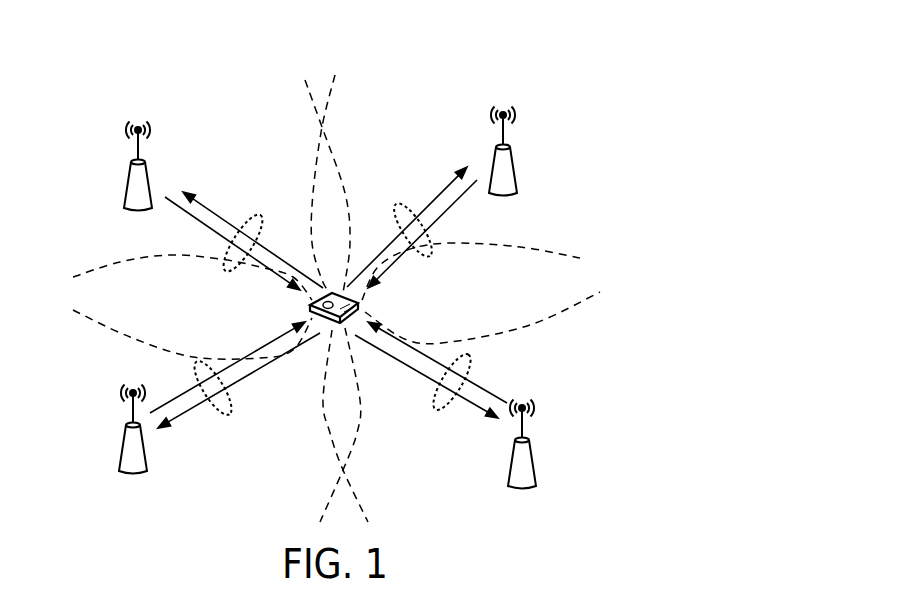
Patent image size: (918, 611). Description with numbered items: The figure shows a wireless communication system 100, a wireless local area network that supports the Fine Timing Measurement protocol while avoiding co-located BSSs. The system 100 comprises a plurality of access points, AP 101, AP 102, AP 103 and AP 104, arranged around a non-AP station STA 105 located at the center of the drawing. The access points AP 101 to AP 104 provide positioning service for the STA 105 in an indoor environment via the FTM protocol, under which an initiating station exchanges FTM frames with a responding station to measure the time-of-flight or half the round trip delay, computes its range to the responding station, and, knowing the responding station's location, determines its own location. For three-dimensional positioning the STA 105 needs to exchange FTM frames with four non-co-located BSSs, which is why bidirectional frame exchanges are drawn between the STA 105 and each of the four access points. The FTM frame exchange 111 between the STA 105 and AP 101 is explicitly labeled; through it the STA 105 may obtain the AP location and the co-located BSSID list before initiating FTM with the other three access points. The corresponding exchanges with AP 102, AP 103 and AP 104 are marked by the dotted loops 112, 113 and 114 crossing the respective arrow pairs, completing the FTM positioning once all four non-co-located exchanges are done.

The wireless communication system 100 is at (723, 100).
The access point AP 101 is at (139, 179).
The access point AP 102 is at (513, 165).
The access point AP 103 is at (134, 443).
The access point AP 104 is at (528, 458).
The non-AP station STA 105 is at (360, 305).
The FTM frame exchange 111 is at (229, 273).
The FTM frame exchange with AP 102 112 is at (433, 264).
The FTM frame exchange with AP 103 113 is at (235, 420).
The FTM frame exchange with AP 104 114 is at (473, 367).